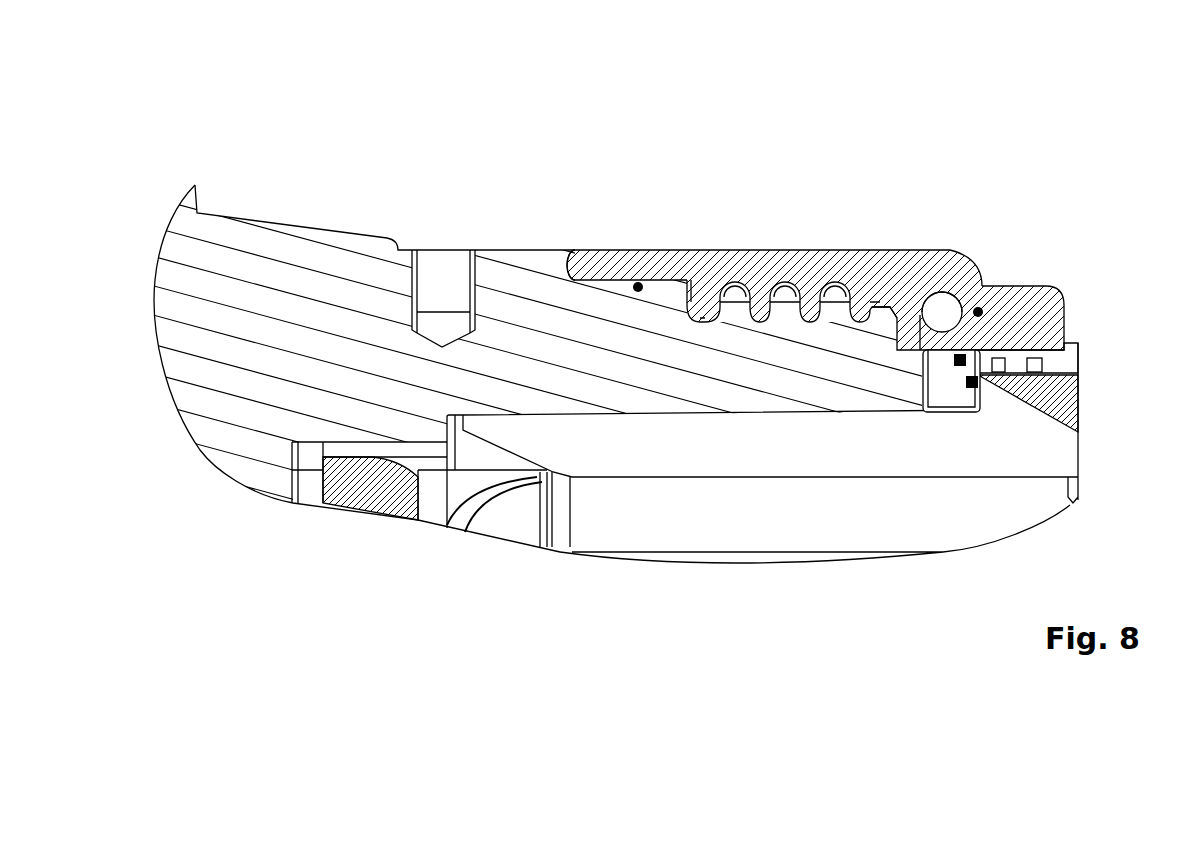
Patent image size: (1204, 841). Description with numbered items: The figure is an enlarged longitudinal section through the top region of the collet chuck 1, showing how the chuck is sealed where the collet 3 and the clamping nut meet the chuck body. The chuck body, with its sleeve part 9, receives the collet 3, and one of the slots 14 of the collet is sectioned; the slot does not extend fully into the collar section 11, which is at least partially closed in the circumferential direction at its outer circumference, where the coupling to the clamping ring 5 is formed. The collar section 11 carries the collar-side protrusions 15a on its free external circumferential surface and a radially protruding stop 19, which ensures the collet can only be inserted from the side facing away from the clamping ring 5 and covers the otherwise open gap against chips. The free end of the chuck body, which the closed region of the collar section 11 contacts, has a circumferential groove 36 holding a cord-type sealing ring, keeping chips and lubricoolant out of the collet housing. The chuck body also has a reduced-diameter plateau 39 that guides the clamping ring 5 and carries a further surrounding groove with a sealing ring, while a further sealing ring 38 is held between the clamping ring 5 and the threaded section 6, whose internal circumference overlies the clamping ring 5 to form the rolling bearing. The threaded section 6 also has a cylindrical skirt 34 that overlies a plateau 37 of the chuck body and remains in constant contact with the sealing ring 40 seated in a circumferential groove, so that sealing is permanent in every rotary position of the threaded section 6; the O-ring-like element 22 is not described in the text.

The collet chuck 1 is at (307, 188).
The collet 3 is at (987, 457).
The clamping ring 5 is at (978, 312).
The threaded section 6 is at (758, 260).
The sleeve part 9 is at (683, 358).
The collar section 11 is at (1050, 395).
The slot 14 is at (730, 458).
The collar-side protrusions 15a is at (1000, 356).
The stop 19 is at (1077, 352).
The O-ring 22 is at (930, 297).
The skirt 34 is at (608, 263).
The groove 36 is at (958, 362).
The plateau 37 is at (567, 257).
The sealing ring 38 is at (946, 290).
The plateau 39 is at (968, 382).
The sealing ring 40 is at (638, 287).